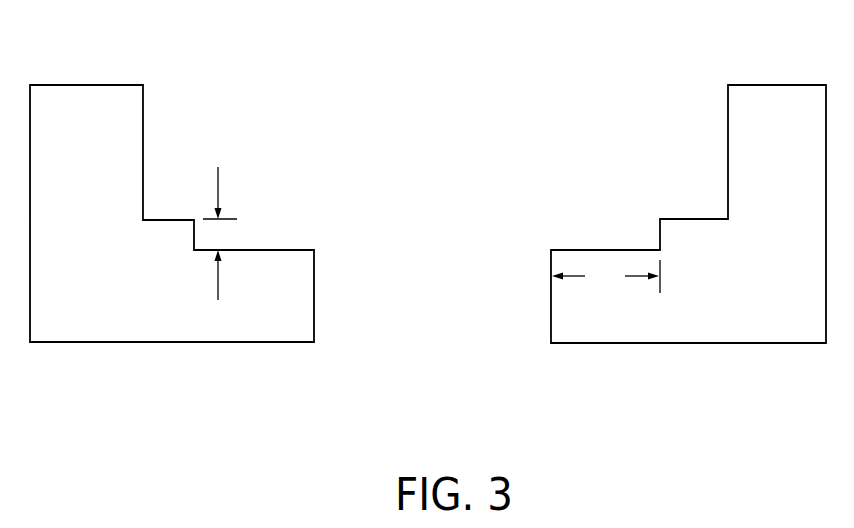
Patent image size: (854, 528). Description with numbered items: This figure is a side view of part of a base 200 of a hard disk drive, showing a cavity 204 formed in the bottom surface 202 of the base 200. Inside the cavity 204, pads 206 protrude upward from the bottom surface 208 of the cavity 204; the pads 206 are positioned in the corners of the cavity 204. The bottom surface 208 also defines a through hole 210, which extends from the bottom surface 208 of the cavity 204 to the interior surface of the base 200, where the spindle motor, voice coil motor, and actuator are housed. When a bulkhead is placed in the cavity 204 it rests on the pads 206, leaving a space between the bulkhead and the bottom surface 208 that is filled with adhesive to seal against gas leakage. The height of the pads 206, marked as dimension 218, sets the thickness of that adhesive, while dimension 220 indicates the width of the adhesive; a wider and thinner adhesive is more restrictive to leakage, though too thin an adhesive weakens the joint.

The base 200 is at (113, 320).
The bottom surface of the base 202 is at (87, 85).
The cavity 204 is at (576, 72).
The pads 206 is at (703, 219).
The bottom surface of the cavity 208 is at (609, 250).
The through hole 210 is at (425, 291).
The height of the pads 218 is at (221, 233).
The width of the adhesive 220 is at (606, 276).